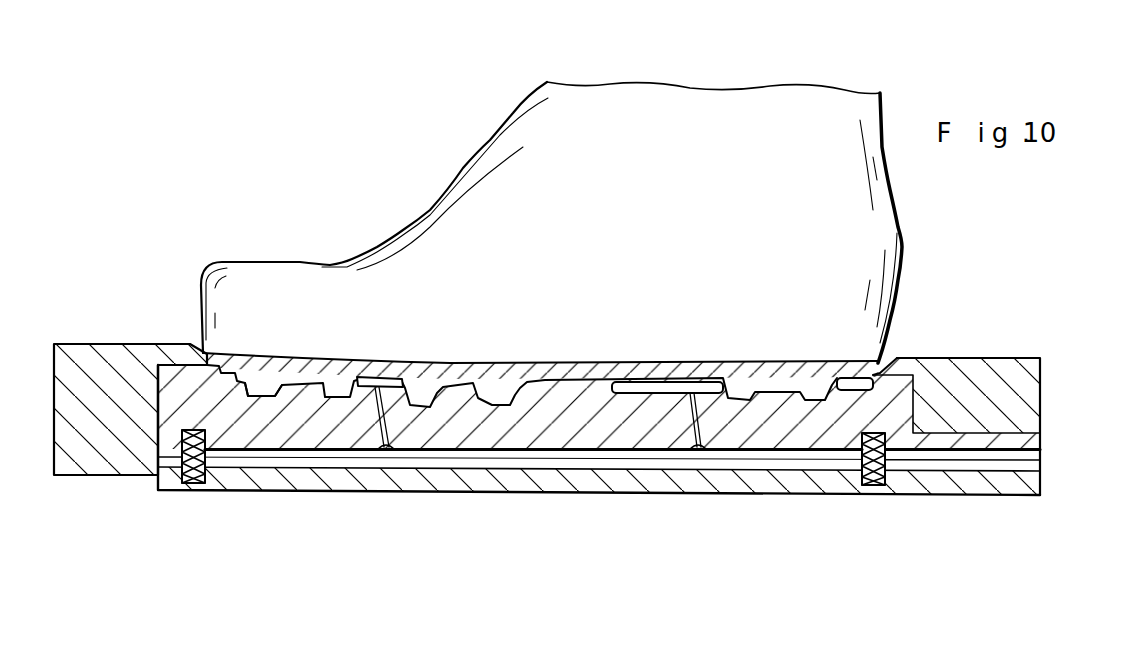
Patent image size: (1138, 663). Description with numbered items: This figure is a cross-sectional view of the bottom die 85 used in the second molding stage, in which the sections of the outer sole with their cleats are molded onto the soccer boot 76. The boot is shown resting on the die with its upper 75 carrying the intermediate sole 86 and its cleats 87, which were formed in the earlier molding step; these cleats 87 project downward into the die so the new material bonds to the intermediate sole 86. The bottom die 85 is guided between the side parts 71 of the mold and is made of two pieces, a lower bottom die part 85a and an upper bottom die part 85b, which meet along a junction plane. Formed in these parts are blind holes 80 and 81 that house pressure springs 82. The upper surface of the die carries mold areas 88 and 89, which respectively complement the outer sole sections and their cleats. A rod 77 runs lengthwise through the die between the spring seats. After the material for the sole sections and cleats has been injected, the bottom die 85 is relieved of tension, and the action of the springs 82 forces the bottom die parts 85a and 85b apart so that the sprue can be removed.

The side part of the mold 71 is at (1012, 412).
The upper 75 is at (360, 287).
The soccer boot 76 is at (398, 229).
The rod 77 is at (1023, 469).
The blind hole 80 is at (198, 484).
The blind hole 81 is at (148, 468).
The pressure spring 82 is at (220, 475).
The bottom die 85 is at (716, 497).
The lower bottom die part 85a is at (993, 486).
The upper bottom die part 85b is at (892, 392).
The intermediate sole 86 is at (752, 376).
The cleats of the intermediate sole 87 is at (420, 382).
The mold area for sole sections 88 is at (265, 372).
The mold area for cleats 89 is at (792, 380).